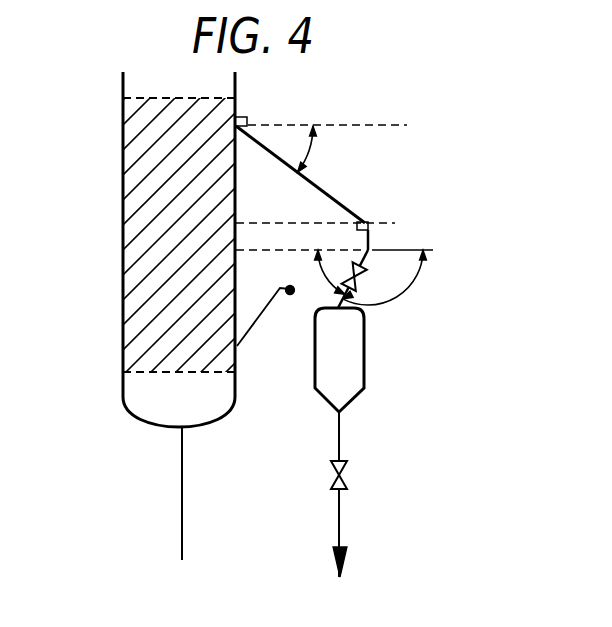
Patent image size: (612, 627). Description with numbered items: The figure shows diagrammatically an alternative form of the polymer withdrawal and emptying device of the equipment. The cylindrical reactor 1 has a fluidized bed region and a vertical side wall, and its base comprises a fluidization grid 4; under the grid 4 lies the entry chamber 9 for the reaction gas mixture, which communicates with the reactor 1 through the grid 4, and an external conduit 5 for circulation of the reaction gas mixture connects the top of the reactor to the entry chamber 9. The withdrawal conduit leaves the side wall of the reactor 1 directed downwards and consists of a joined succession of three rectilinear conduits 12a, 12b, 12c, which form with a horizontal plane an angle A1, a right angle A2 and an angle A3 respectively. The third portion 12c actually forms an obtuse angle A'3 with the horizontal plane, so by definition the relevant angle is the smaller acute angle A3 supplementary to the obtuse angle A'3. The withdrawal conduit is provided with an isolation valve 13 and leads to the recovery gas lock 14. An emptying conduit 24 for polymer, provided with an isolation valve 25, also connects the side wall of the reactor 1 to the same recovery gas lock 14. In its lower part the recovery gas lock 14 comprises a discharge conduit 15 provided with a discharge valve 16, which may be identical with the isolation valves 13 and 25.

The cylindrical reactor 1 is at (132, 223).
The fluidization grid 4 is at (150, 373).
The external conduit 5 is at (182, 500).
The entry chamber 9 is at (155, 427).
The rectilinear conduit 12a is at (333, 199).
The rectilinear conduit 12b is at (372, 241).
The rectilinear conduit 12c is at (370, 255).
The isolation valve 13 is at (360, 287).
The recovery gas lock 14 is at (365, 365).
The discharge conduit 15 is at (340, 530).
The discharge valve 16 is at (348, 480).
The emptying conduit 24 is at (255, 323).
The isolation valve 25 is at (311, 296).
The angle A1 is at (310, 152).
The right angle A2 is at (347, 227).
The acute angle A3 is at (319, 271).
The obtuse angle A'3 is at (415, 295).